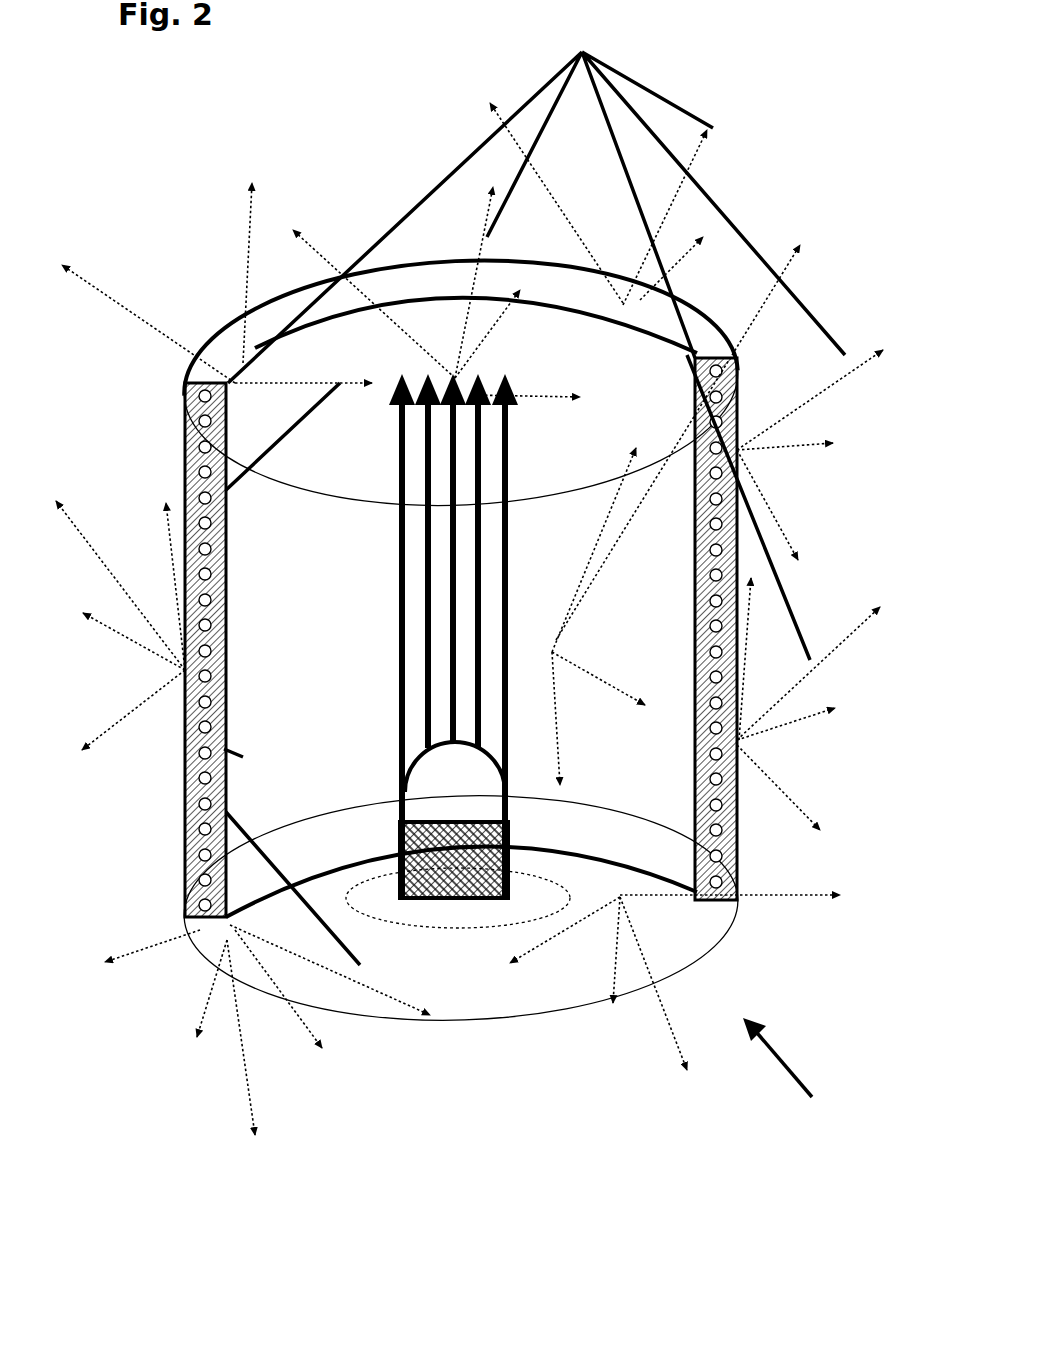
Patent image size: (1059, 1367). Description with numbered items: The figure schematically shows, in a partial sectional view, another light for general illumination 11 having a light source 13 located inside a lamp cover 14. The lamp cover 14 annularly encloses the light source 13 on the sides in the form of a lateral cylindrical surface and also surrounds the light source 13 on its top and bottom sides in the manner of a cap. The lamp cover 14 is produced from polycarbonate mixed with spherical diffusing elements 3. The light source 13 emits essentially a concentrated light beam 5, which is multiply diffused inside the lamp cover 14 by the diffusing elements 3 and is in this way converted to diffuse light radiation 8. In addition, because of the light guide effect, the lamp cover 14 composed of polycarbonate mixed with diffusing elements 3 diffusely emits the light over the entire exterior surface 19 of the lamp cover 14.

The spherical diffusing elements 3 is at (717, 800).
The concentrated light beam 5 is at (455, 592).
The diffuse light radiation 8 is at (534, 492).
The light for general illumination 11 is at (799, 1073).
The light source 13 is at (465, 860).
The lamp cover 14 is at (185, 768).
The exterior surface 19 is at (185, 472).